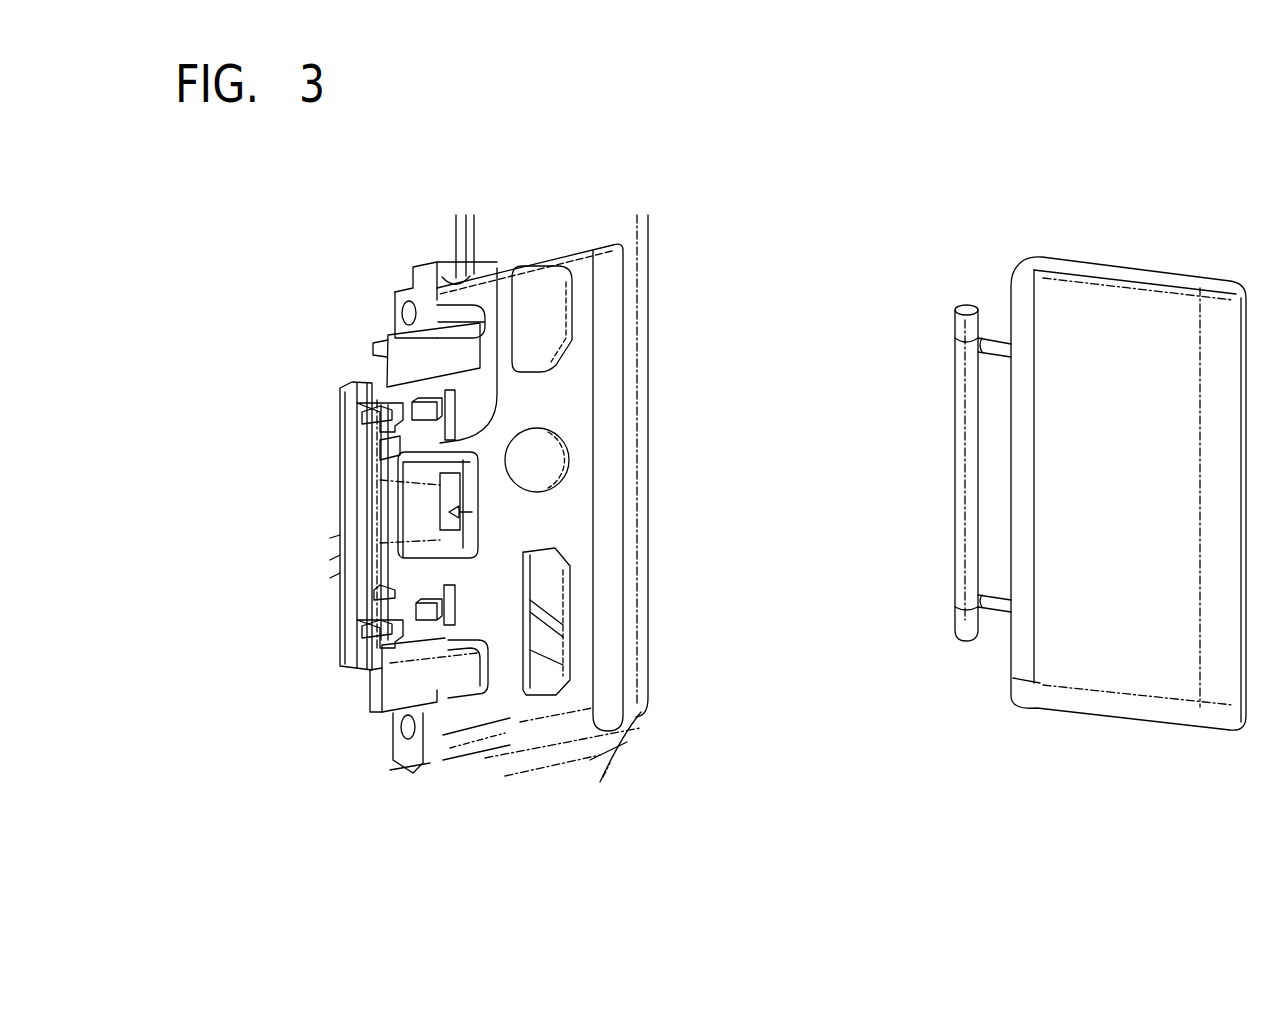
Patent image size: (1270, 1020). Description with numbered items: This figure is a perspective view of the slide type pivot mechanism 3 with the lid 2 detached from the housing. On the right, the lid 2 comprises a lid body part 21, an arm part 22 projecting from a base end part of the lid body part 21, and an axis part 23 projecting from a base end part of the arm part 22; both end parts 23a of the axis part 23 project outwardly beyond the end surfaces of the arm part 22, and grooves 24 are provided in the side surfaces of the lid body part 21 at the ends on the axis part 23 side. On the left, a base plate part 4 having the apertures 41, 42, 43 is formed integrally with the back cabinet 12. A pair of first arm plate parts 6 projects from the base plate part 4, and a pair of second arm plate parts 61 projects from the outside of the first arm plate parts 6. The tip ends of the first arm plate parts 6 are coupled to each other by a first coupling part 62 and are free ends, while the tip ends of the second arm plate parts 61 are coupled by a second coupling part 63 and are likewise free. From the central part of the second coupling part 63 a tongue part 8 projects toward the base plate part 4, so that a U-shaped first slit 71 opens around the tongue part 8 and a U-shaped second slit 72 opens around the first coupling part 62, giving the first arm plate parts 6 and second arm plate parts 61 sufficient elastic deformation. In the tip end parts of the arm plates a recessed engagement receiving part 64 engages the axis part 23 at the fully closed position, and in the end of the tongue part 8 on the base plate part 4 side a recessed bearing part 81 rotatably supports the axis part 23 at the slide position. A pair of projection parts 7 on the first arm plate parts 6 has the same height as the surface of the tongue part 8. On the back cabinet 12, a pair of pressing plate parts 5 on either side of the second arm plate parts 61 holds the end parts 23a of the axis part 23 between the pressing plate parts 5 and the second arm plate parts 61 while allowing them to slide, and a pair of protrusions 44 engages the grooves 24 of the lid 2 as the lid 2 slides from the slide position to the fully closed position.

The lid 2 is at (1180, 230).
The slide type pivot mechanism 3 is at (822, 212).
The base plate part 4 is at (550, 528).
The pressing plate part 5 is at (395, 365).
The first arm plate part 6 is at (497, 310).
The projection part 7 is at (430, 410).
The tongue part 8 is at (466, 640).
The back cabinet 12 is at (607, 292).
The lid body part 21 is at (1152, 686).
The arm part 22 is at (1000, 586).
The axis part 23 is at (948, 445).
The end part 23a is at (955, 325).
The groove 24 is at (1090, 270).
The aperture 41 is at (552, 455).
The aperture 42 is at (560, 338).
The aperture 43 is at (558, 650).
The protrusion 44 is at (463, 277).
The second arm plate part 61 is at (382, 414).
The first coupling part 62 is at (395, 475).
The second coupling part 63 is at (357, 545).
The engagement receiving part 64 is at (372, 587).
The first slit 71 is at (475, 565).
The second slit 72 is at (372, 418).
The bearing part 81 is at (467, 512).